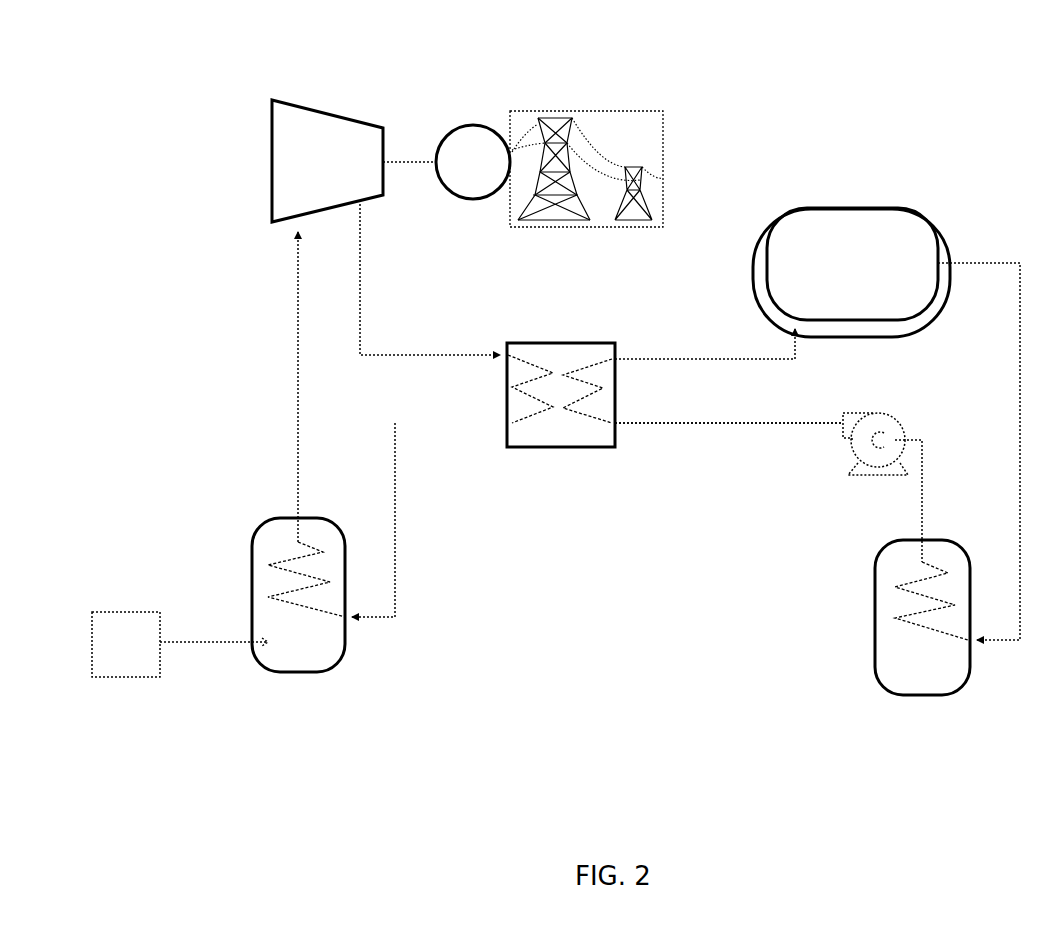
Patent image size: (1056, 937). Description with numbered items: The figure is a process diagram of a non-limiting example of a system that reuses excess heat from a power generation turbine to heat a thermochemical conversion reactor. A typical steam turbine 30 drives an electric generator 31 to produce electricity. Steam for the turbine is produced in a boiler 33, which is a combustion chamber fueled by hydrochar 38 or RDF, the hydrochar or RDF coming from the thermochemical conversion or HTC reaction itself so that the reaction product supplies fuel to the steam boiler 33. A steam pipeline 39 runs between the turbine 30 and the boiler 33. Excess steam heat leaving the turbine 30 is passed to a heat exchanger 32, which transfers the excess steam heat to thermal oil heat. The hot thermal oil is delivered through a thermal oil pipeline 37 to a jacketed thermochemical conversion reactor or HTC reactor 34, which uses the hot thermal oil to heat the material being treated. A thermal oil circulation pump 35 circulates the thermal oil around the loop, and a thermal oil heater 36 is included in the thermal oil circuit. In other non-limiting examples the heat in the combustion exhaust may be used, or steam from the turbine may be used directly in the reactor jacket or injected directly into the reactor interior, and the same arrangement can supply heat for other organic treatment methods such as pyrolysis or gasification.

The steam turbine 30 is at (308, 147).
The electric generator 31 is at (477, 142).
The heat exchanger 32 is at (558, 355).
The boiler 33 is at (270, 547).
The HTC reactor 34 is at (842, 238).
The thermal oil circulation pump 35 is at (868, 422).
The thermal oil heater 36 is at (930, 670).
The thermal oil pipeline 37 is at (691, 424).
The hydrochar 38 is at (120, 633).
The steam pipeline 39 is at (297, 378).